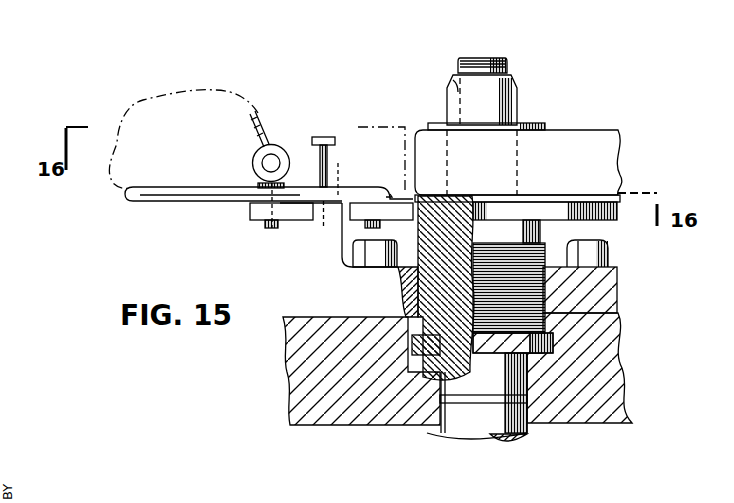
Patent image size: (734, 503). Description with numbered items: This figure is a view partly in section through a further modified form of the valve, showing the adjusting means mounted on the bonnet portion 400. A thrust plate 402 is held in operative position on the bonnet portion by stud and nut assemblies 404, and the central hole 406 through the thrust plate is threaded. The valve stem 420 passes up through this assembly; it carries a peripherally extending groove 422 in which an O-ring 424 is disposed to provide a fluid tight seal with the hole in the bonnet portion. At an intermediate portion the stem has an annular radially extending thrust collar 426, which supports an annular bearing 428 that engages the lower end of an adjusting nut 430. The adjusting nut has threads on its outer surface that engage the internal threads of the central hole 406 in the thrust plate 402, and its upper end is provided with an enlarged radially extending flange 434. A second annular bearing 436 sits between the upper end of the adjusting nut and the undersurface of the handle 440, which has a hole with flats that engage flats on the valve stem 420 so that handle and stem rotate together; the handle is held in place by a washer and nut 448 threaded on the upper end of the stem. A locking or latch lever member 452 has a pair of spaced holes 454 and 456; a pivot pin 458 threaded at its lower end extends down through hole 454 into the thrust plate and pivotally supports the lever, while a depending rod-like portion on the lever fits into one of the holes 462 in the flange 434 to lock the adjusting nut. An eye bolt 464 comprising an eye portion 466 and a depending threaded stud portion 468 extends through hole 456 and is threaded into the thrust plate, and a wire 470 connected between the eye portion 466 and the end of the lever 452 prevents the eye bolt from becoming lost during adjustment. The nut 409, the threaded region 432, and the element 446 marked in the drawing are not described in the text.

The bonnet portion 400 is at (620, 355).
The thrust plate 402 is at (616, 298).
The stud and nut assemblies 404 is at (618, 253).
The central hole 406 is at (616, 290).
The clamp nut 409 is at (357, 239).
The valve stem 420 is at (428, 438).
The peripherally extending groove 422 is at (534, 400).
The O-ring 424 is at (525, 450).
The thrust collar 426 is at (553, 344).
The annular bearing 428 is at (412, 347).
The adjusting nut 430 is at (548, 228).
The threaded bushing 432 is at (505, 270).
The flange 434 is at (615, 208).
The second annular bearing 436 is at (433, 197).
The handle 440 is at (597, 128).
The flange 446 is at (540, 127).
The washer and nut 448 is at (514, 104).
The lever member 452 is at (167, 201).
The hole 454 is at (336, 178).
The hole 456 is at (253, 199).
The pivot pin 458 is at (333, 159).
The holes 462 is at (566, 498).
The eye bolt 464 is at (281, 131).
The eye portion 466 is at (256, 150).
The threaded stud portion 468 is at (266, 228).
The wire 470 is at (222, 85).